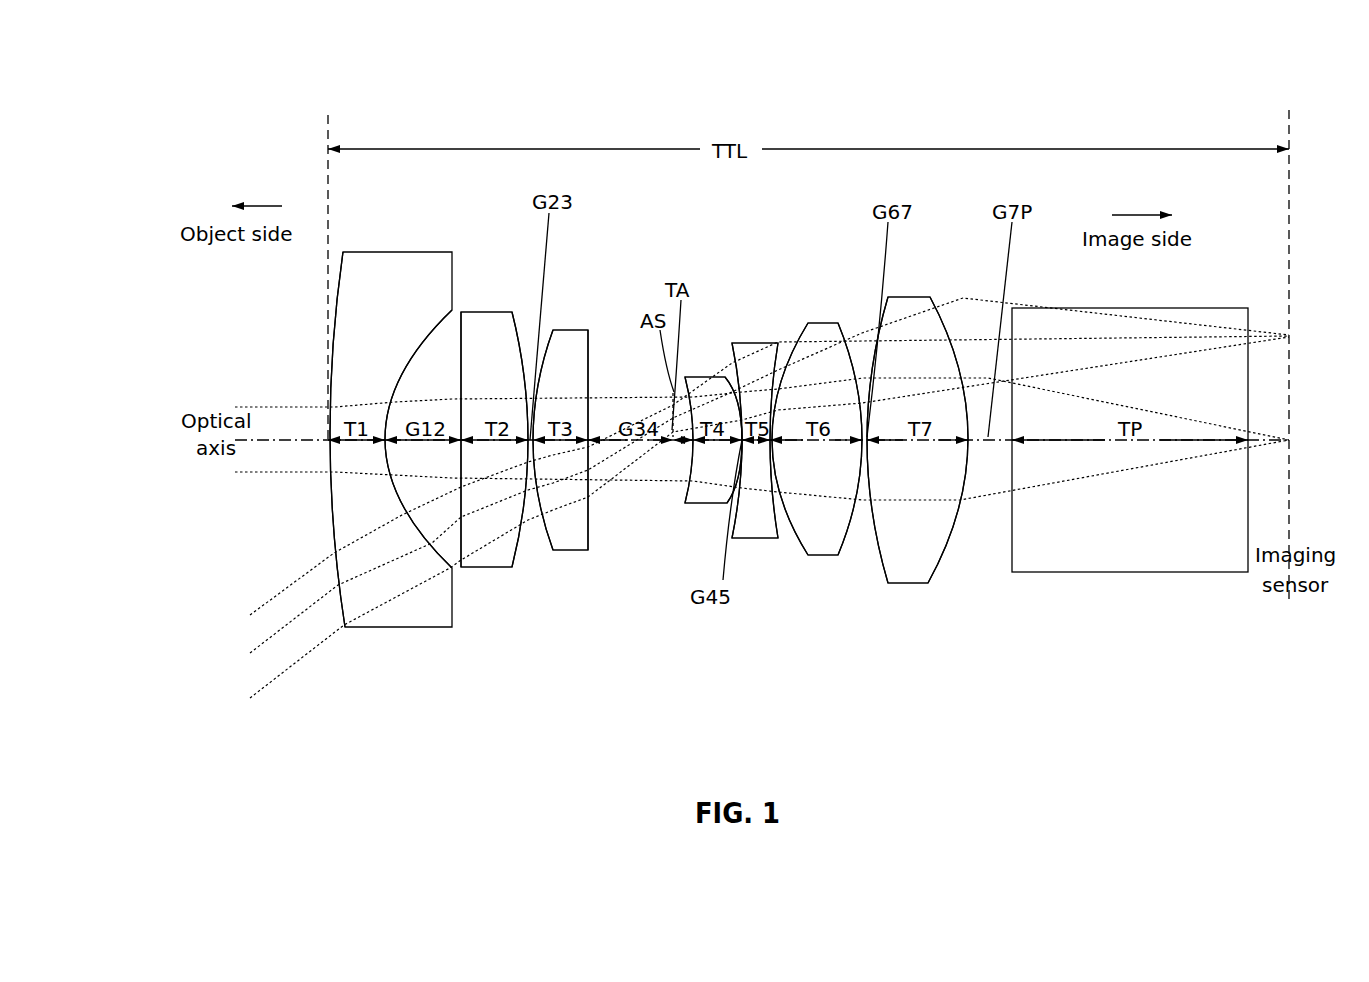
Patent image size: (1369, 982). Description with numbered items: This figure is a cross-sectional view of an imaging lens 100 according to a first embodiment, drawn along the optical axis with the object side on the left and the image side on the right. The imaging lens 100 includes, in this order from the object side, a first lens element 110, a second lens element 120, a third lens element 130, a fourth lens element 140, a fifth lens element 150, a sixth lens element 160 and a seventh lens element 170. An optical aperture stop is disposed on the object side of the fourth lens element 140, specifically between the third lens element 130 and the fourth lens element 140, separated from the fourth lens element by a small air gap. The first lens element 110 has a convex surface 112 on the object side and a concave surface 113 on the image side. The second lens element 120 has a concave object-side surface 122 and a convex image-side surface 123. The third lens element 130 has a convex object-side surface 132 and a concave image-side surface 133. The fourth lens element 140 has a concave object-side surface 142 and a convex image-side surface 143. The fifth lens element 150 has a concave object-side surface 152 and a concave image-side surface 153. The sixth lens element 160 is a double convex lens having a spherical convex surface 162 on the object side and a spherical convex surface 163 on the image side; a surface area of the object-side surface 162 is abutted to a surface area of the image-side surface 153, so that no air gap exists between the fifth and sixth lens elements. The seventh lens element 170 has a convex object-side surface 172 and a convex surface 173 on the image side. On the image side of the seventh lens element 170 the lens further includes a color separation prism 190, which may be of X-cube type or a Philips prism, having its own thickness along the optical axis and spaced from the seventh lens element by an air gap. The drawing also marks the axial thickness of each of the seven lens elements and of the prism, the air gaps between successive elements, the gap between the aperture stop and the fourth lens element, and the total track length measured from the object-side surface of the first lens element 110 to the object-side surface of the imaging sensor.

The imaging lens 100 is at (980, 60).
The first lens element 110 is at (391, 428).
The convex surface 112 is at (330, 328).
The concave surface 113 is at (413, 345).
The second lens element 120 is at (494, 425).
The concave object-side surface 122 is at (460, 462).
The convex image-side surface 123 is at (518, 328).
The third lens element 130 is at (565, 428).
The convex object-side surface 132 is at (540, 538).
The concave image-side surface 133 is at (587, 510).
The fourth lens element 140 is at (713, 425).
The concave object-side surface 142 is at (693, 447).
The convex image-side surface 143 is at (728, 497).
The fifth lens element 150 is at (754, 429).
The concave object-side surface 152 is at (742, 390).
The concave image-side surface 153 is at (772, 448).
The sixth lens element 160 is at (817, 427).
The spherical convex surface 162 is at (780, 372).
The spherical convex surface 163 is at (847, 342).
The seventh lens element 170 is at (917, 426).
The convex object-side surface 172 is at (883, 560).
The convex surface 173 is at (938, 557).
The color separation prism 190 is at (1130, 440).